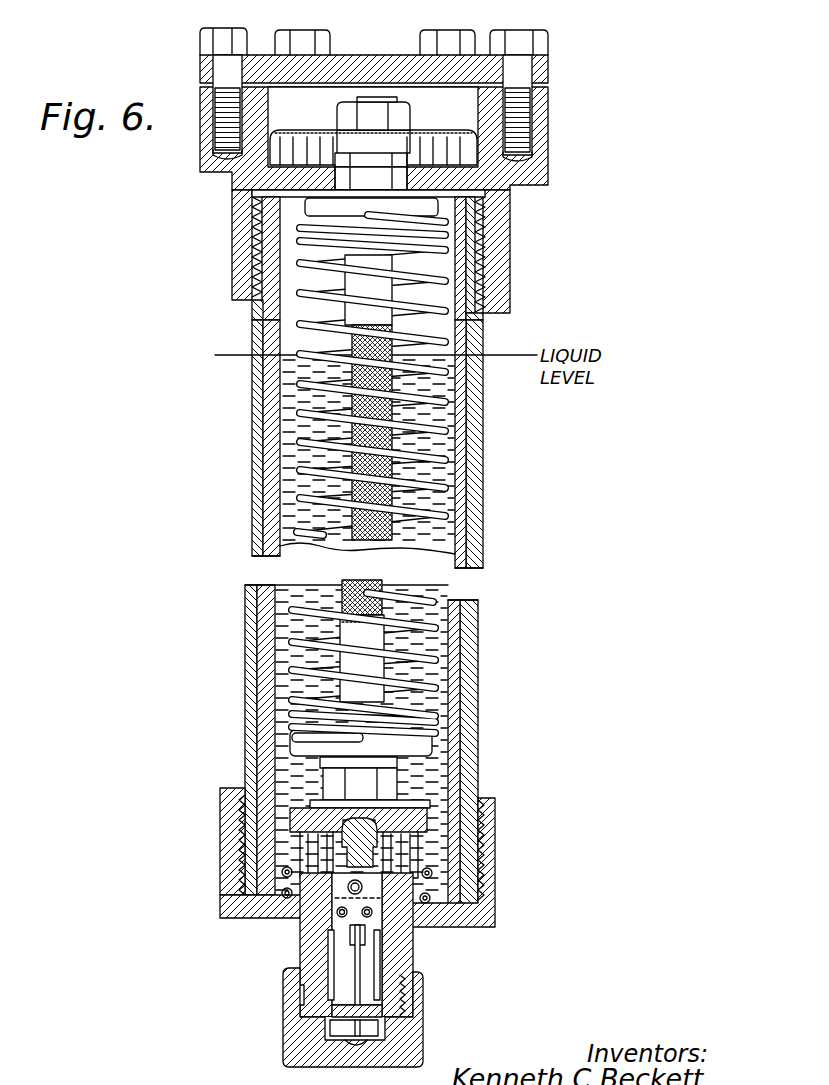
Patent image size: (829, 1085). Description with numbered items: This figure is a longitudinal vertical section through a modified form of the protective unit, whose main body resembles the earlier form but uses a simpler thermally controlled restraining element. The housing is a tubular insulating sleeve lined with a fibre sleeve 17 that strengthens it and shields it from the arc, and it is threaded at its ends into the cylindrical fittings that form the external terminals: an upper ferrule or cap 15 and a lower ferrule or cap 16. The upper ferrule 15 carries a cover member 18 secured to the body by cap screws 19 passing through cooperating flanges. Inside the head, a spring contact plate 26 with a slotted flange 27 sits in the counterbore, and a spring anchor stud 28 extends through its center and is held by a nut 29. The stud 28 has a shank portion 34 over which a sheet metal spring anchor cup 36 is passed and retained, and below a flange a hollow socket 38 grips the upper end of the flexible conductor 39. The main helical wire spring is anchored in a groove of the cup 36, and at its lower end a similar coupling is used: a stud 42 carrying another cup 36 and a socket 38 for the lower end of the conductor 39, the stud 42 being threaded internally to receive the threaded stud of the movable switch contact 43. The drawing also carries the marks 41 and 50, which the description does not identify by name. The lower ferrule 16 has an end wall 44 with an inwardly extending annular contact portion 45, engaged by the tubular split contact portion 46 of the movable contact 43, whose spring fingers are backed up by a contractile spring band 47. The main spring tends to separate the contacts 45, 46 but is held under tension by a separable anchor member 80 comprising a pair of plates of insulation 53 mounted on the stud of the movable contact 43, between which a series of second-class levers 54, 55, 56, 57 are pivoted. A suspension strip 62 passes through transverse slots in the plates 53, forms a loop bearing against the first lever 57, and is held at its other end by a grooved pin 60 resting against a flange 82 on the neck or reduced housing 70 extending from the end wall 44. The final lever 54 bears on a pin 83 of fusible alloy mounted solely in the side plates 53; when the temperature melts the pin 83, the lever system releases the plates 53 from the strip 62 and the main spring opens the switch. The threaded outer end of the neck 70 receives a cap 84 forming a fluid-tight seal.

The upper ferrule or cap 15 is at (232, 242).
The lower ferrule or cap 16 is at (220, 848).
The fibre sleeve lining 17 is at (470, 502).
The cover member 18 is at (550, 74).
The cap screws 19 is at (298, 40).
The spring contact plate 26 is at (465, 128).
The slotted flange 27 is at (230, 175).
The spring anchor stud 28 is at (362, 99).
The nut 29 is at (408, 116).
The shank portion 34 is at (487, 193).
The spring anchor cup 36 is at (432, 208).
The hollow socket 38 is at (385, 298).
The flexible conductor 39 is at (392, 412).
The tube lining 41 is at (472, 530).
The stud 42 is at (367, 773).
The movable switch contact 43 is at (338, 803).
The end wall 44 is at (270, 906).
The inwardly extending contact portion 45 is at (282, 883).
The tubular split contact portion 46 is at (420, 853).
The contractile spring band 47 is at (433, 876).
The plug 50 is at (383, 808).
The plates of insulation 53 is at (400, 986).
The final lever 54 is at (410, 972).
The lever of the second class 55 is at (340, 985).
The lever of the second class 56 is at (410, 955).
The first lever 57 is at (335, 961).
The grooved pin 60 is at (372, 1030).
The suspension strip 62 is at (405, 1006).
The neck or reduced housing 70 is at (330, 950).
The separable anchor member 80 is at (405, 930).
The flange 82 is at (330, 1016).
The fusible alloy pin 83 is at (298, 992).
The cap 84 is at (315, 1067).